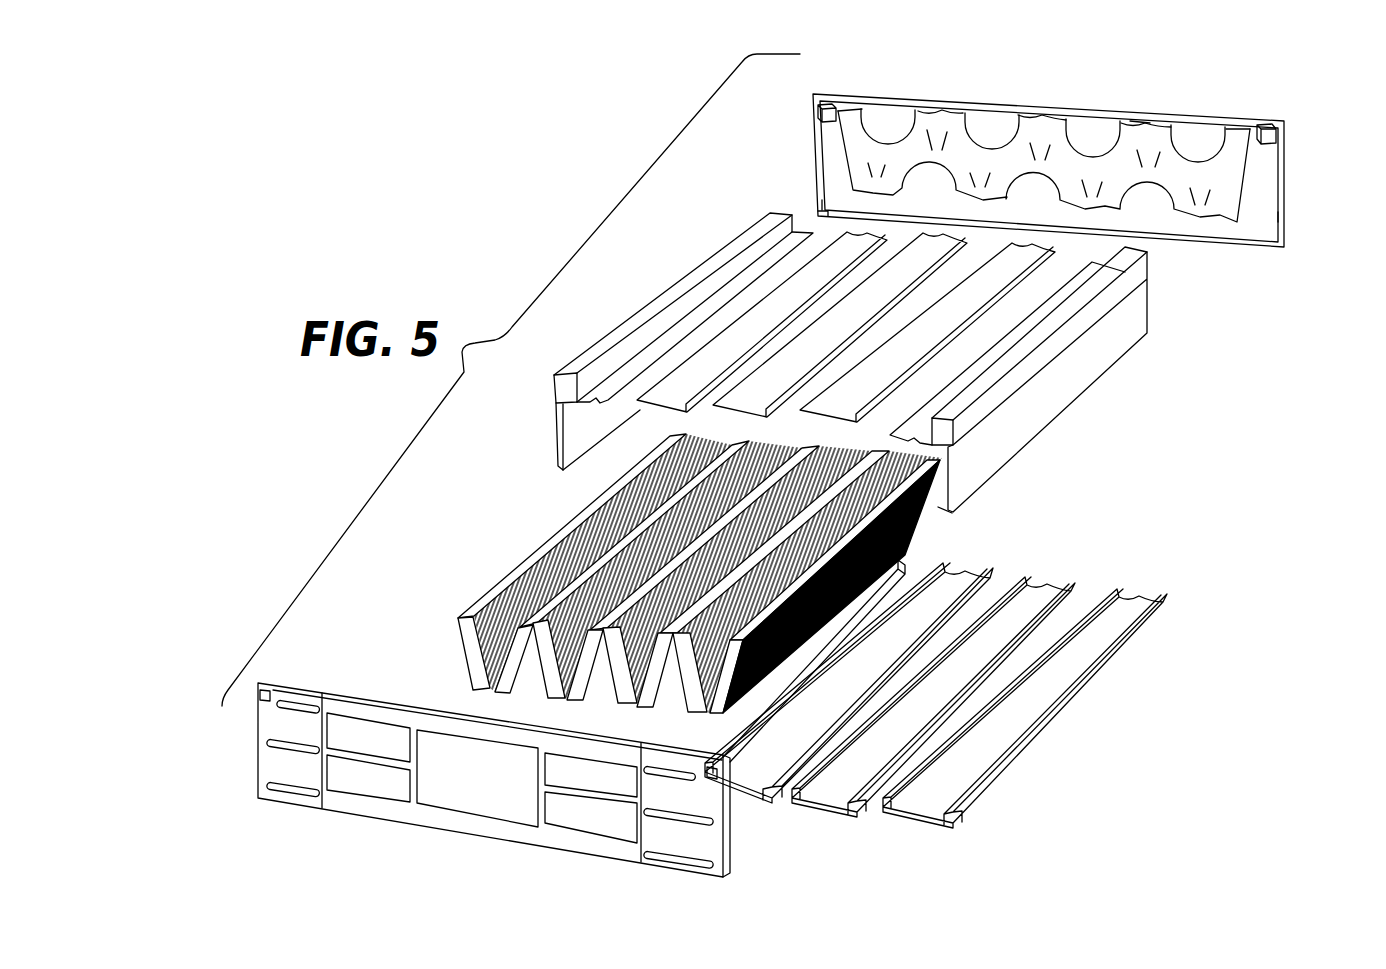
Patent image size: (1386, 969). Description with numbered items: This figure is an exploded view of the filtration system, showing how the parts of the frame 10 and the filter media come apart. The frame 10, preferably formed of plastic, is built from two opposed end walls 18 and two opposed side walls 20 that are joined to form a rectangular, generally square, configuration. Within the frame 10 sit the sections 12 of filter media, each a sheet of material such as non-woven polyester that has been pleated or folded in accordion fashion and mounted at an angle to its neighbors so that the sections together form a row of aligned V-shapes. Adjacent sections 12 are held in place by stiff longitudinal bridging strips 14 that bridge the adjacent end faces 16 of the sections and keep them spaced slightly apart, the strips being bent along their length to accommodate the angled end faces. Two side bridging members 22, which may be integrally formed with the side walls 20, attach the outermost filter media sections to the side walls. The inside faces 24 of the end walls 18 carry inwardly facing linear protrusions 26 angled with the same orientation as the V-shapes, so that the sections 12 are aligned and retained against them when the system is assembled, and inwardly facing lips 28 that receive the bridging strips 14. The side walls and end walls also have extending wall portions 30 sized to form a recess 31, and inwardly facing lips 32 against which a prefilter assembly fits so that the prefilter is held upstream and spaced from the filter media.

The frame 10 is at (1015, 70).
The sections of filter media 12 is at (920, 528).
The bridging strips 14 is at (823, 268).
The end faces 16 is at (627, 541).
The end walls 18 is at (1205, 130).
The side walls 20 is at (678, 291).
The side bridging members 22 is at (755, 275).
The inside faces 24 is at (1093, 136).
The linear protrusions 26 is at (947, 147).
The lips 28 is at (1142, 122).
The extending wall portions 30 is at (840, 206).
The recess 31 is at (1181, 222).
The lips 32 is at (1278, 216).